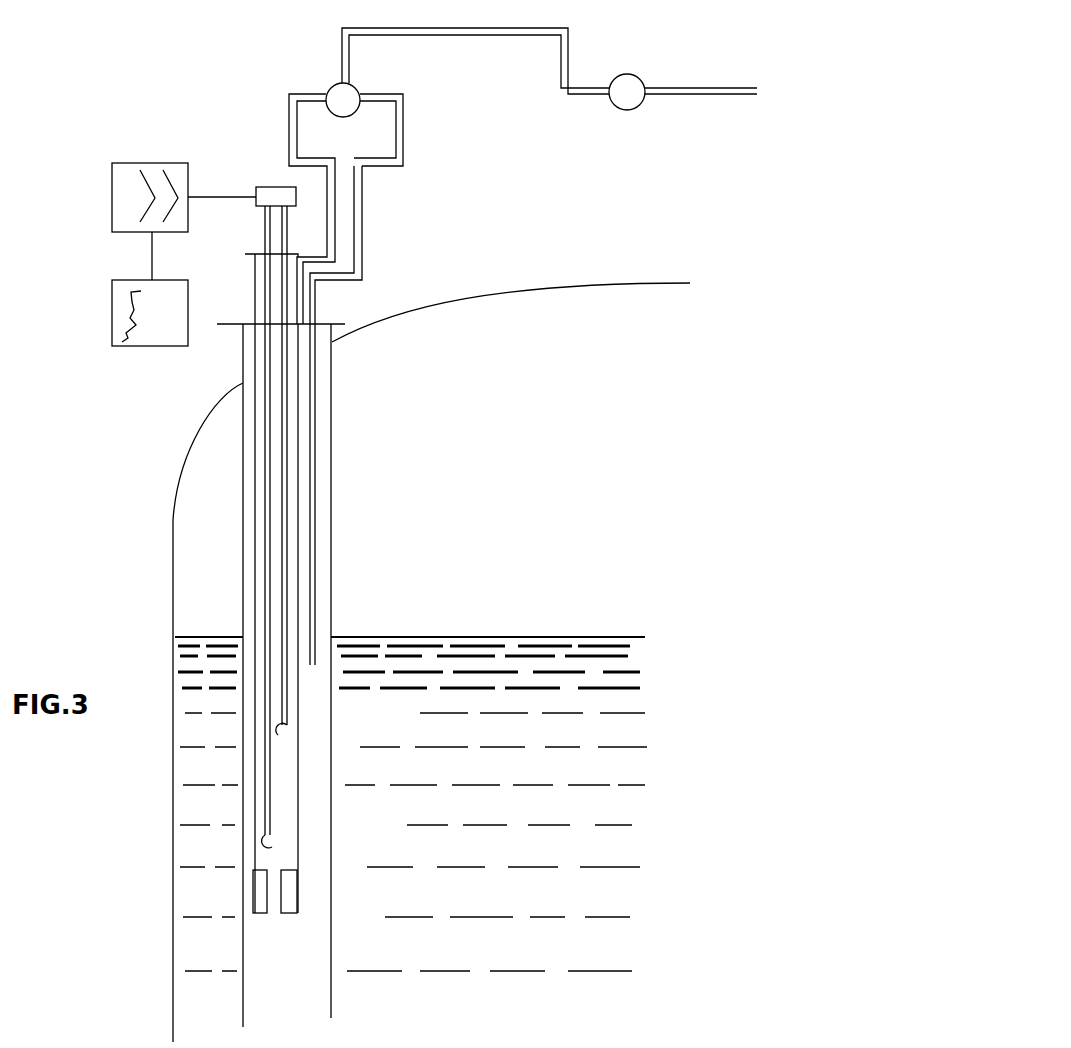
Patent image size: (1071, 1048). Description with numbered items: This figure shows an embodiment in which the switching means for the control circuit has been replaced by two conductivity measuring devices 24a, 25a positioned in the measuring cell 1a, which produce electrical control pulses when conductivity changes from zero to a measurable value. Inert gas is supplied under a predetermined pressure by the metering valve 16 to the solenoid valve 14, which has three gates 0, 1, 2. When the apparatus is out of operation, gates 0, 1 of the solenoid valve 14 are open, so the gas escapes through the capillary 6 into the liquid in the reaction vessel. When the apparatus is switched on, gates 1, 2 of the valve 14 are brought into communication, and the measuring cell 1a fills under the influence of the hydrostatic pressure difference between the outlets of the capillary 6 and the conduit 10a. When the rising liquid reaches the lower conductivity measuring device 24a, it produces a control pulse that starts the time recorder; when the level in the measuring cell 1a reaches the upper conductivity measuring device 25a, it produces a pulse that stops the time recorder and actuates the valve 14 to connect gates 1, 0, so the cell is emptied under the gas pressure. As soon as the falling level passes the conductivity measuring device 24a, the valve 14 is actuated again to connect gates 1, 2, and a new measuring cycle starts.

The solenoid valve 14 is at (353, 113).
The metering valve 16 is at (641, 106).
The conduit 10a is at (317, 460).
The measuring cell 1a is at (298, 578).
The conductivity measuring device 25a is at (283, 732).
The conductivity measuring device 24a is at (275, 845).
The capillary 6 is at (297, 907).
The gate 0 is at (358, 73).
The gate 1 is at (318, 113).
The gate 2 is at (372, 113).